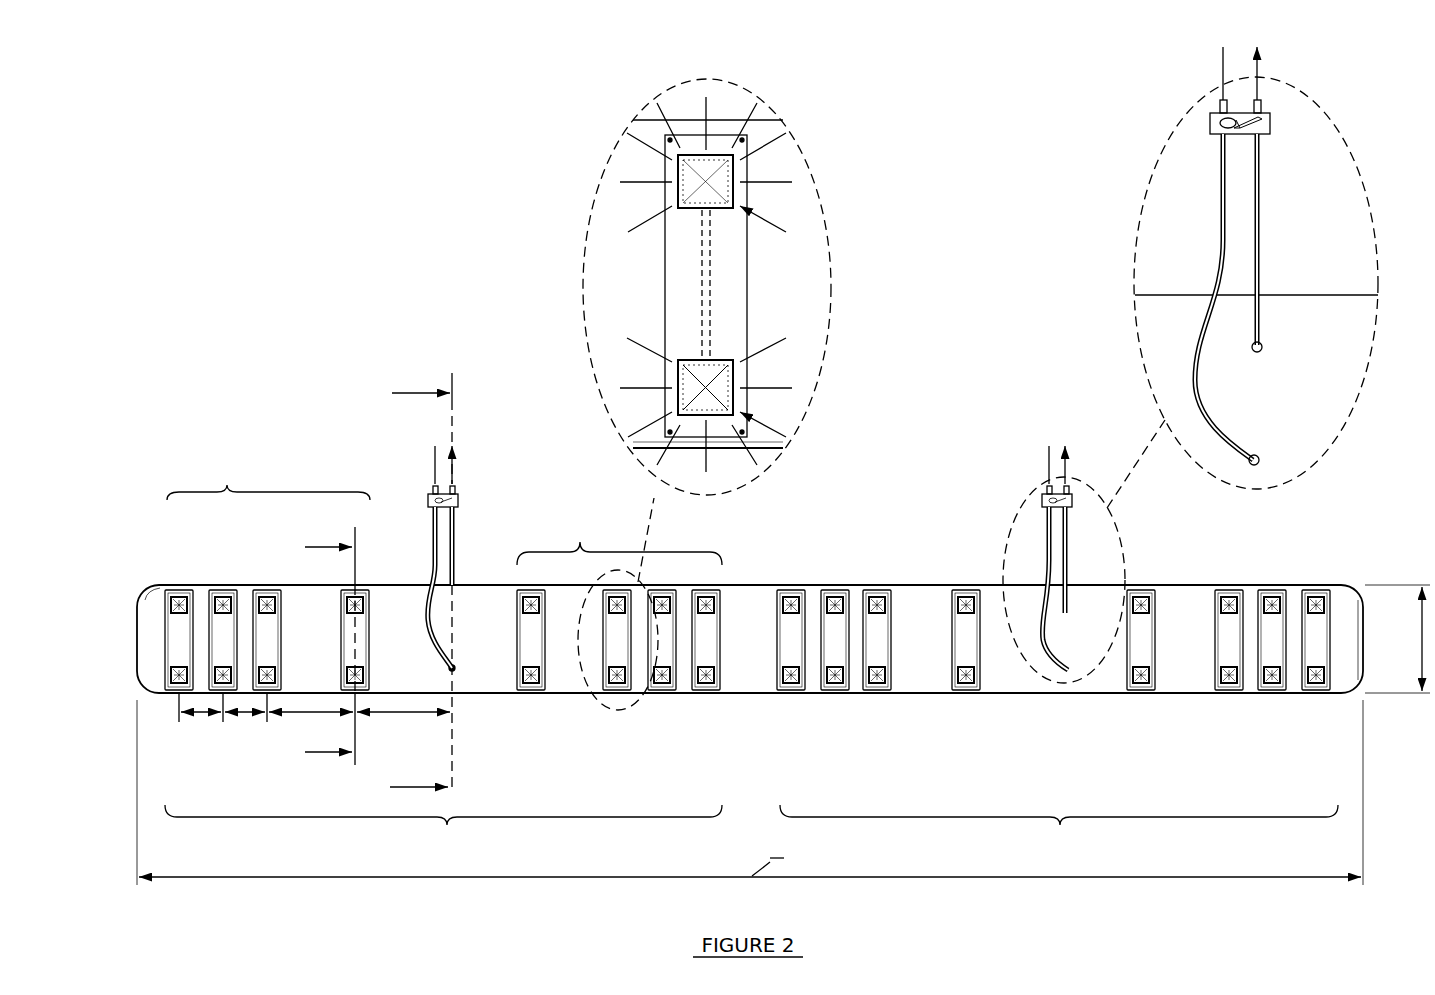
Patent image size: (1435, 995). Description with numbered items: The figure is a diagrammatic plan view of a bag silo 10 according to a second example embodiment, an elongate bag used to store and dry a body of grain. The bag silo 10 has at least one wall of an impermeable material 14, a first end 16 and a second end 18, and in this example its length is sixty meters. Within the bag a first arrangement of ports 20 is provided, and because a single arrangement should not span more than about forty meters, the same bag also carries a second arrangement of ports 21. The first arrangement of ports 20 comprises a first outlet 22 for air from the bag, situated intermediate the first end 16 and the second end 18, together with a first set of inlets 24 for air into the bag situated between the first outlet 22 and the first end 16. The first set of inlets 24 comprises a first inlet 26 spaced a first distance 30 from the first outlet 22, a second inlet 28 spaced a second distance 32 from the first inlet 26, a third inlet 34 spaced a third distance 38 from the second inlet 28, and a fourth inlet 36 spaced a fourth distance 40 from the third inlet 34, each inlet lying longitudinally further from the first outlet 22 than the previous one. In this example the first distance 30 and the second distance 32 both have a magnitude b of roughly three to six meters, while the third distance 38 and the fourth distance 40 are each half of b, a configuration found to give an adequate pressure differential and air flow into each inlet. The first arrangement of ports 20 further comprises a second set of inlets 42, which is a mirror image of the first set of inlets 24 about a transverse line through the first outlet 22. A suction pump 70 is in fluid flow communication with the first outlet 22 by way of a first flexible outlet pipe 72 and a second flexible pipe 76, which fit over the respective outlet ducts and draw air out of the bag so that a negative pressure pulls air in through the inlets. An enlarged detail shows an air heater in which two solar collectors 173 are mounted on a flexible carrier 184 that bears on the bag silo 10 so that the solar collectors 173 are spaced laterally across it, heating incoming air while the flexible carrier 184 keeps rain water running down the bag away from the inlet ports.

The bag silo 10 is at (325, 240).
The wall of an impermeable material 14 is at (918, 668).
The first end 16 is at (138, 642).
The second end 18 is at (1365, 645).
The first arrangement of ports 20 is at (414, 655).
The second arrangement of ports 21 is at (1057, 724).
The first outlet 22 is at (460, 572).
The first set of inlets 24 is at (238, 571).
The first inlet 26 is at (369, 586).
The second inlet 28 is at (255, 587).
The first distance 30 is at (398, 714).
The second distance 32 is at (312, 710).
The third inlet 34 is at (211, 587).
The fourth inlet 36 is at (167, 587).
The third distance 38 is at (245, 714).
The fourth distance 40 is at (200, 714).
The second set of inlets 42 is at (619, 601).
The suction pump 70 is at (873, 365).
The first flexible outlet pipe 72 is at (1218, 217).
The second flexible pipe 76 is at (1262, 218).
The solar collector 173 is at (723, 207).
The flexible carrier 184 is at (677, 288).